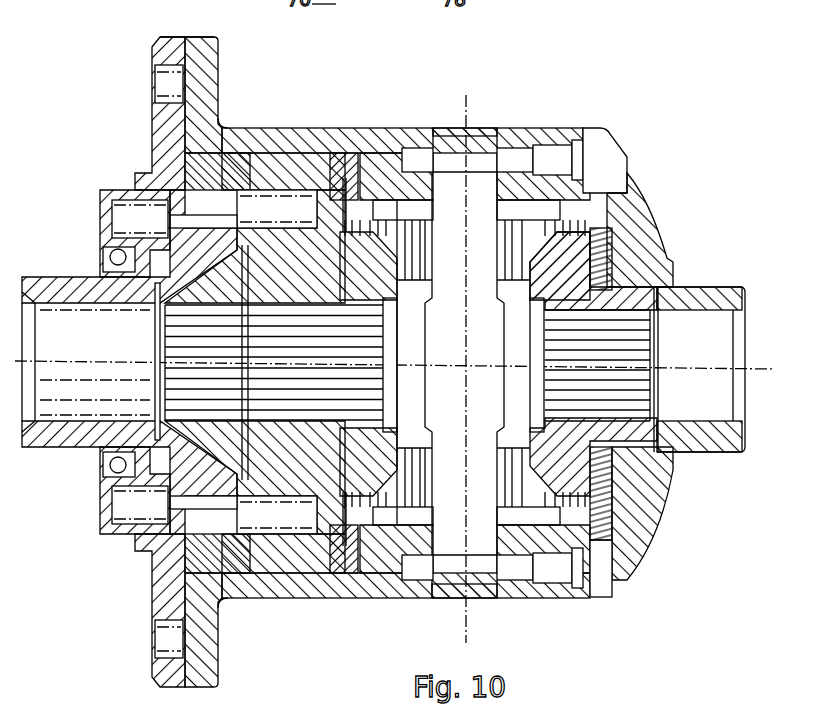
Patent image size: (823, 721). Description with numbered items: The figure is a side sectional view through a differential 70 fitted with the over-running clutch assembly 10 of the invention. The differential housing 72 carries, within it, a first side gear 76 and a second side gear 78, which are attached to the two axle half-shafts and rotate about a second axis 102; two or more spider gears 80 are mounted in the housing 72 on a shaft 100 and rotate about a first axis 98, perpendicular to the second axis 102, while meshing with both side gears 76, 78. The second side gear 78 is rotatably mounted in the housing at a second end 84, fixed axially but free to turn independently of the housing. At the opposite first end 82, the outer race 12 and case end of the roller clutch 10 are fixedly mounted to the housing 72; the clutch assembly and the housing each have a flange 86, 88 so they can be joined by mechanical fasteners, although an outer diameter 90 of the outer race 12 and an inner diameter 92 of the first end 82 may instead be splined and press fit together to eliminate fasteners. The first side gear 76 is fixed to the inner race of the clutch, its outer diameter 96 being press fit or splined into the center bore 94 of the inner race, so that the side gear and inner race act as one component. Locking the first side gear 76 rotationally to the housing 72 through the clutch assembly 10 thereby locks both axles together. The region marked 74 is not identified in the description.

The over-running clutch assembly 10 is at (293, 160).
The outer race 12 is at (160, 157).
The differential 70 is at (538, 636).
The housing 72 is at (373, 128).
The housing case 74 is at (266, 124).
The first side gear 76 is at (318, 492).
The second side gear 78 is at (592, 498).
The spider gears 80 is at (517, 237).
The first end 82 is at (205, 67).
The second end 84 is at (612, 205).
The flange 86 is at (165, 52).
The flange 88 is at (200, 37).
The outer diameter 90 is at (338, 135).
The inner diameter 92 is at (222, 165).
The center bore 94 is at (105, 500).
The outer diameter 96 is at (100, 246).
The first axis 98 is at (470, 107).
The shaft 100 is at (455, 584).
The second axis 102 is at (770, 368).